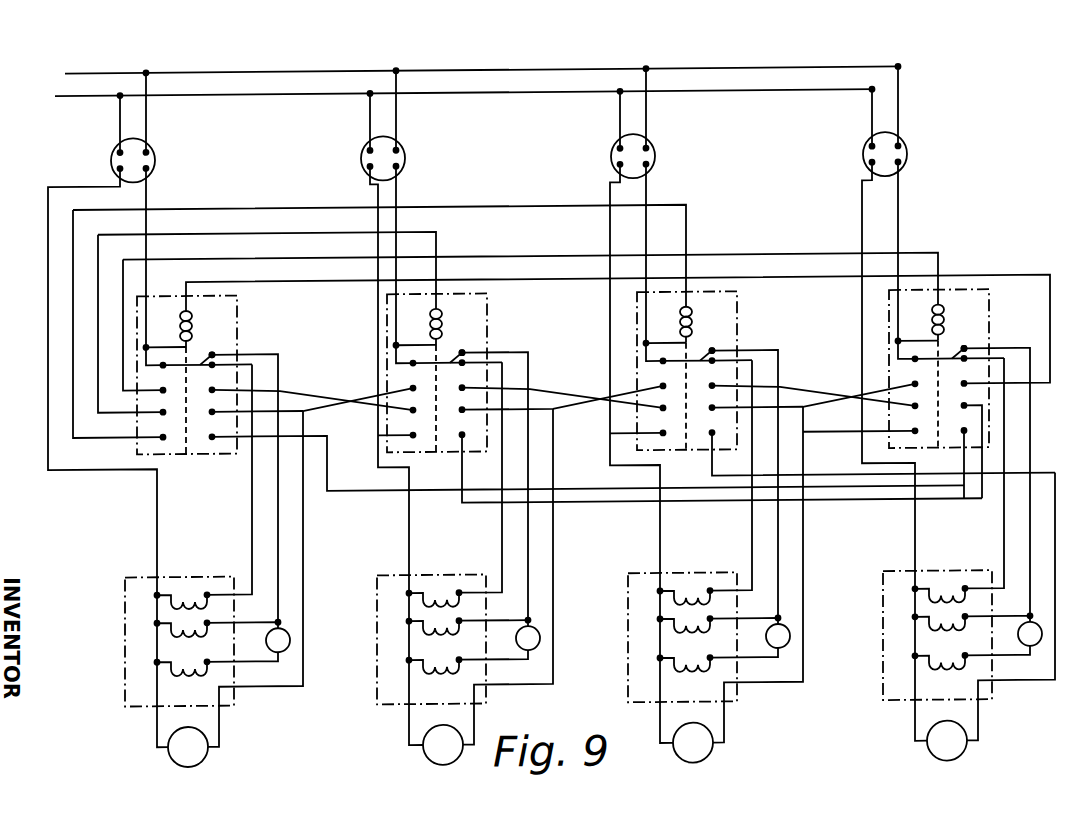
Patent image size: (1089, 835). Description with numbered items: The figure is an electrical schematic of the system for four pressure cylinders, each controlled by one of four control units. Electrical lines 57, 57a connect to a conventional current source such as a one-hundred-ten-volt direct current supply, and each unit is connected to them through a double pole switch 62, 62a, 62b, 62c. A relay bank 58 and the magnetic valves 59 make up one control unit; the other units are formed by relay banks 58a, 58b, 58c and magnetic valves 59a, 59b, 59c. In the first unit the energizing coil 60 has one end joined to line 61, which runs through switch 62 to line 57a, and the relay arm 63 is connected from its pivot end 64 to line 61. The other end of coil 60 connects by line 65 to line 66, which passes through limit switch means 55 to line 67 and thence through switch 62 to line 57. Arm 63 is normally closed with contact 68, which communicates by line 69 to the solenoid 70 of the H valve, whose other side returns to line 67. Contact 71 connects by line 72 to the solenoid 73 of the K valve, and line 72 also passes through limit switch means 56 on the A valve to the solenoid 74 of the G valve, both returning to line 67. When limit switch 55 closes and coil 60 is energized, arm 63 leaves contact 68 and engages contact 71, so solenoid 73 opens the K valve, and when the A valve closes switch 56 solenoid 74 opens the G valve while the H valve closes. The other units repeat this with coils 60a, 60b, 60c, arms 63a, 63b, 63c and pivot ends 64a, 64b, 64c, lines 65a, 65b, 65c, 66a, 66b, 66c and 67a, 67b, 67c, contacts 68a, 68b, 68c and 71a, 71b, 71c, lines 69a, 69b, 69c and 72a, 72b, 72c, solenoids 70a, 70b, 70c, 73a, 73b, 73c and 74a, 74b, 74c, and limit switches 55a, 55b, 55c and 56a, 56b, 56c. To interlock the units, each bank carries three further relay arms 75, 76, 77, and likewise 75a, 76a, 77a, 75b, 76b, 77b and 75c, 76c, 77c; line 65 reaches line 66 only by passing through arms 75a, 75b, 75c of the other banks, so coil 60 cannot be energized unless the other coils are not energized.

The limit switch means 55 is at (208, 750).
The limit switch means 55a is at (423, 750).
The limit switch means 55b is at (713, 750).
The limit switch means 55c is at (967, 750).
The limit switch means 56 is at (290, 640).
The limit switch means 56a is at (540, 640).
The limit switch means 56b is at (790, 640).
The limit switch means 56c is at (1032, 654).
The electrical line 57 is at (274, 96).
The electrical line 57a is at (275, 73).
The relay bank 58 is at (237, 327).
The relay bank 58a is at (487, 327).
The relay bank 58b is at (737, 327).
The relay bank 58c is at (994, 324).
The magnetic valves 59 is at (125, 698).
The magnetic valves 59a is at (377, 704).
The magnetic valves 59b is at (628, 704).
The magnetic valves 59c is at (883, 704).
The energizing coil 60 is at (192, 314).
The energizing coil 60a is at (442, 314).
The energizing coil 60b is at (692, 314).
The energizing coil 60c is at (944, 314).
The line 61 is at (147, 297).
The double pole switch 62 is at (155, 163).
The double pole switch 62a is at (405, 165).
The double pole switch 62b is at (655, 165).
The double pole switch 62c is at (907, 165).
The relay arm 63 is at (208, 358).
The relay arm 63a is at (458, 358).
The relay arm 63b is at (708, 358).
The relay arm 63c is at (960, 358).
The pivot end 64 is at (162, 370).
The pivot end 64a is at (412, 370).
The pivot end 64b is at (662, 370).
The pivot end 64c is at (914, 370).
The line 65 is at (340, 283).
The line 65a is at (437, 250).
The line 65b is at (687, 227).
The line 65c is at (902, 236).
The line 66 is at (303, 671).
The line 66a is at (553, 671).
The line 66b is at (803, 671).
The line 66c is at (1024, 684).
The line 67 is at (157, 727).
The line 67a is at (409, 724).
The line 67b is at (660, 724).
The line 67c is at (915, 724).
The contact 68 is at (231, 374).
The contact 68a is at (481, 372).
The contact 68b is at (731, 370).
The contact 68c is at (983, 368).
The line 69 is at (251, 506).
The line 69a is at (502, 472).
The line 69b is at (750, 470).
The line 69c is at (1004, 494).
The solenoid of the H valve 70 is at (177, 604).
The solenoid of the H valve 70a is at (430, 603).
The solenoid of the H valve 70b is at (681, 601).
The solenoid of the H valve 70c is at (934, 599).
The contact 71 is at (214, 357).
The contact 71a is at (464, 357).
The contact 71b is at (714, 357).
The contact 71c is at (966, 357).
The line 72 is at (279, 385).
The line 72a is at (529, 385).
The line 72b is at (779, 385).
The line 72c is at (1030, 404).
The solenoid of the K valve 73 is at (207, 632).
The solenoid of the K valve 73a is at (456, 631).
The solenoid of the K valve 73b is at (706, 628).
The solenoid of the K valve 73c is at (958, 626).
The solenoid of the G valve 74 is at (205, 667).
The solenoid of the G valve 74a is at (454, 666).
The solenoid of the G valve 74b is at (705, 664).
The solenoid of the G valve 74c is at (957, 662).
The relay arm 75 is at (268, 335).
The relay arm 75a is at (533, 397).
The relay arm 75b is at (784, 395).
The relay arm 75c is at (936, 394).
The relay arm 76 is at (255, 335).
The relay arm 76a is at (533, 410).
The relay arm 76b is at (784, 408).
The relay arm 76c is at (943, 451).
The relay arm 77 is at (518, 347).
The relay arm 77a is at (680, 466).
The relay arm 77b is at (832, 451).
The relay arm 77c is at (885, 464).